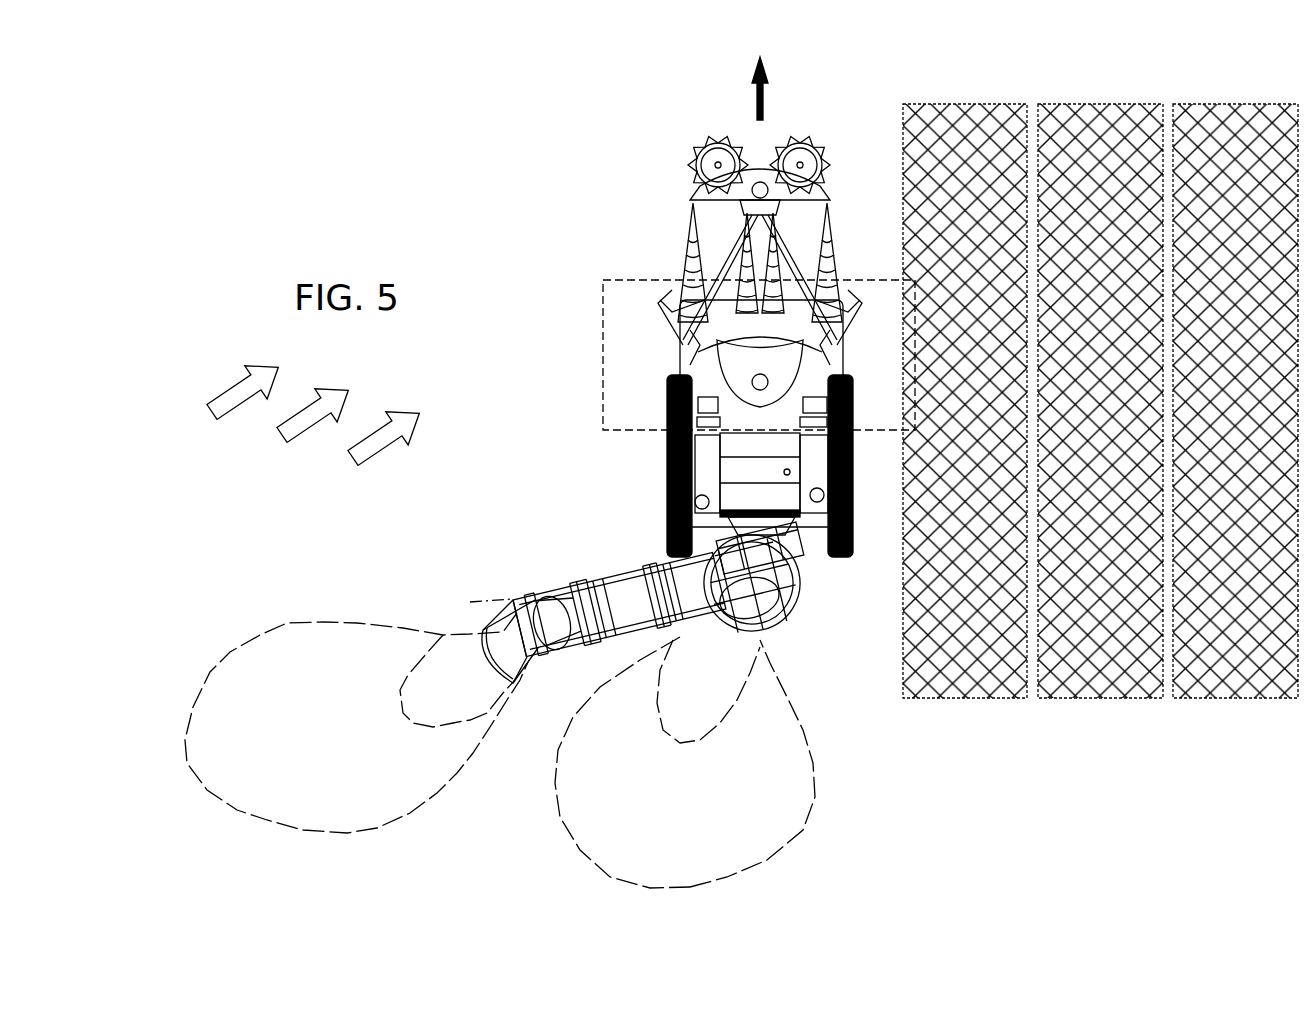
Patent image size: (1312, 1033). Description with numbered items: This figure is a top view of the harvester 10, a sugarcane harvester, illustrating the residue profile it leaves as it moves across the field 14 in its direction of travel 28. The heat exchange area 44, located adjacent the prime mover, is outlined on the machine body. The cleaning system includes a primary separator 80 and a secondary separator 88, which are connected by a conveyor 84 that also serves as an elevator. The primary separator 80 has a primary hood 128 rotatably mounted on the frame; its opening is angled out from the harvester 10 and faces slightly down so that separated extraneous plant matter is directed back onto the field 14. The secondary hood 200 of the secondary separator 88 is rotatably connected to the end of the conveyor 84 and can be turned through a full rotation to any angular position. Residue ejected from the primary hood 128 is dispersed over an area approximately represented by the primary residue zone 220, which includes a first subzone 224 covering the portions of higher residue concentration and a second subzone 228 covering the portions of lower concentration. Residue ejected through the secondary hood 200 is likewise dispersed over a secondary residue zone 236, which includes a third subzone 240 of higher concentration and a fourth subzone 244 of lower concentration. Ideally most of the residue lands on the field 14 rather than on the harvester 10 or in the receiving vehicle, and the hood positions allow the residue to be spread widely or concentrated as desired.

The harvester 10 is at (645, 115).
The field 14 is at (963, 115).
The direction of travel 28 is at (766, 96).
The heat exchange area 44 is at (622, 279).
The primary separator 80 is at (803, 585).
The conveyor 84 is at (615, 568).
The secondary separator 88 is at (537, 596).
The primary hood 128 is at (801, 571).
The secondary hood 200 is at (523, 612).
The primary residue zone 220 is at (245, 694).
The first subzone 224 is at (405, 662).
The second subzone 228 is at (305, 668).
The secondary residue zone 236 is at (627, 827).
The third subzone 240 is at (680, 713).
The fourth subzone 244 is at (753, 840).